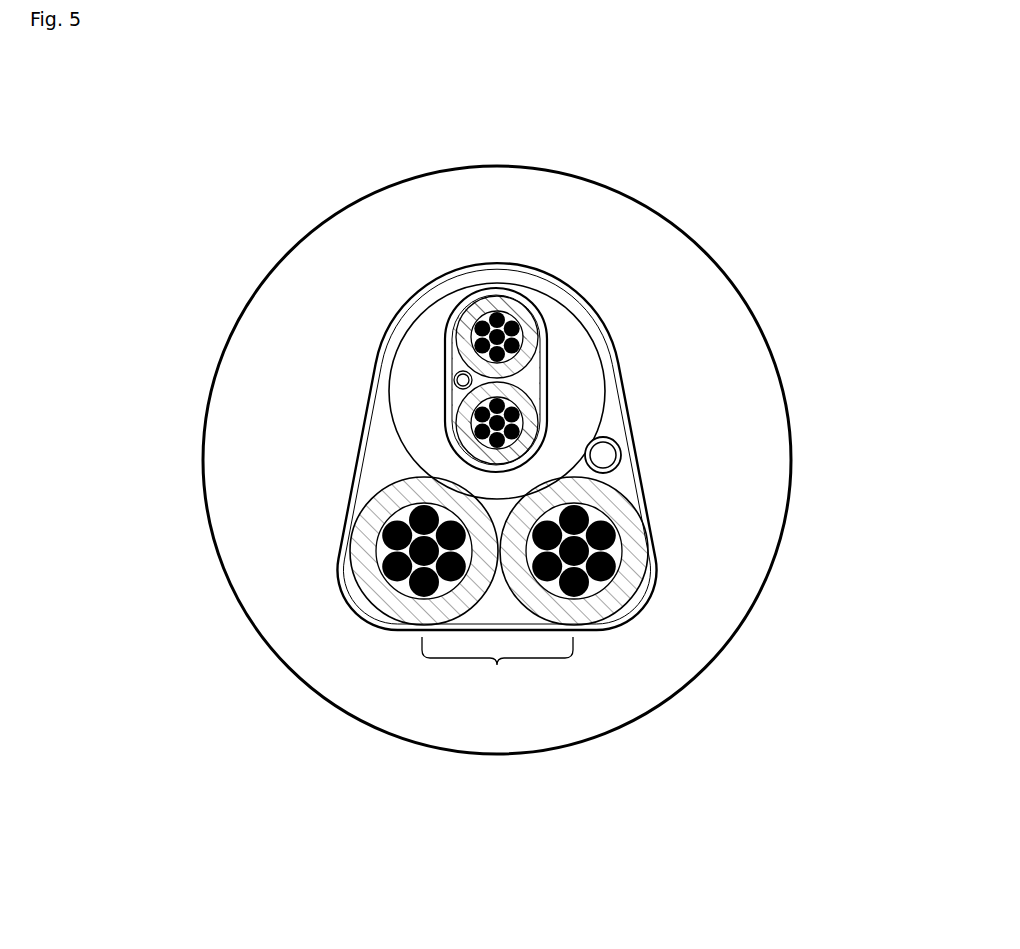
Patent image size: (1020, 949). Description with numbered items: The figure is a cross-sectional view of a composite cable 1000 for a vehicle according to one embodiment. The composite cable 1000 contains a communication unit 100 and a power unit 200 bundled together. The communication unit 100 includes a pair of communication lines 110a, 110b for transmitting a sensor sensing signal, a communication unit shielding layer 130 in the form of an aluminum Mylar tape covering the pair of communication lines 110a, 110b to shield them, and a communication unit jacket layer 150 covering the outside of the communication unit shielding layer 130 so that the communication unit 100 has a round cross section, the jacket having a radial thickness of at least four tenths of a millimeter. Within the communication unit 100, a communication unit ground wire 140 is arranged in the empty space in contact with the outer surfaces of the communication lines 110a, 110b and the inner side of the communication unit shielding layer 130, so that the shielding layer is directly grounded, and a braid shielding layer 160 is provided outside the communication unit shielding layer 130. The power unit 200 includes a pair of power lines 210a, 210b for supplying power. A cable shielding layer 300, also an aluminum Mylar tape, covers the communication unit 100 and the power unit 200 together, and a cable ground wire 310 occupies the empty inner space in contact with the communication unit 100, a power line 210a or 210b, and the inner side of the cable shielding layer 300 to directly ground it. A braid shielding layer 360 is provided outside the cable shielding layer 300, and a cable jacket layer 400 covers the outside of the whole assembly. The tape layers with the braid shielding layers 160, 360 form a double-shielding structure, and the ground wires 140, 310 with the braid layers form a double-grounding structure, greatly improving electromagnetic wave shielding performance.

The composite cable 1000 is at (673, 162).
The communication unit 100 is at (400, 445).
The communication line 110a is at (537, 388).
The communication line 110b is at (450, 312).
The communication unit shielding layer 130 is at (445, 402).
The communication unit ground wire 140 is at (445, 333).
The communication unit jacket layer 150 is at (588, 375).
The braid shielding layer 160 is at (445, 375).
The power unit 200 is at (497, 668).
The power line 210a is at (617, 488).
The power line 210b is at (363, 612).
The cable shielding layer 300 is at (640, 470).
The cable ground wire 310 is at (633, 437).
The braid shielding layer 360 is at (625, 458).
The cable jacket layer 400 is at (742, 557).